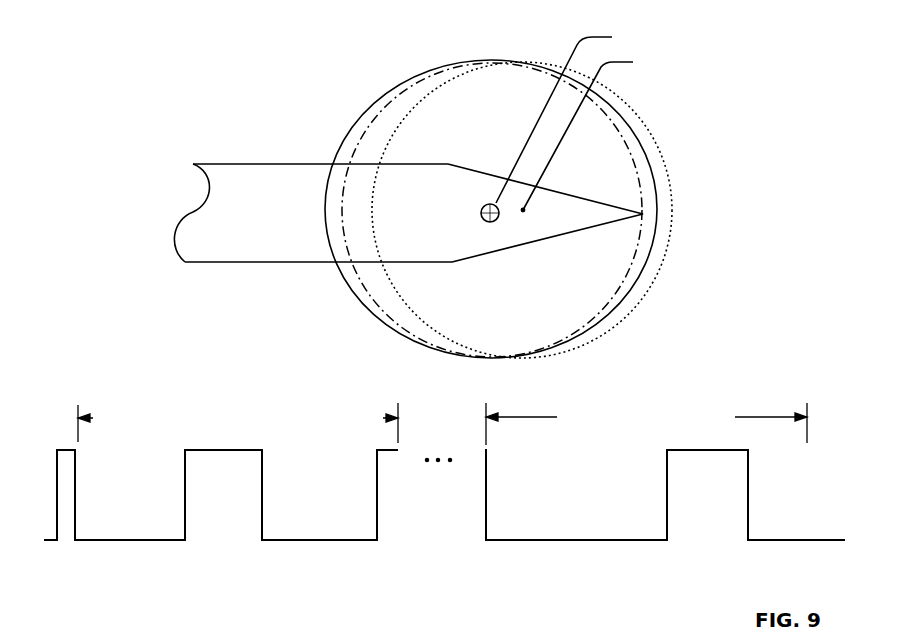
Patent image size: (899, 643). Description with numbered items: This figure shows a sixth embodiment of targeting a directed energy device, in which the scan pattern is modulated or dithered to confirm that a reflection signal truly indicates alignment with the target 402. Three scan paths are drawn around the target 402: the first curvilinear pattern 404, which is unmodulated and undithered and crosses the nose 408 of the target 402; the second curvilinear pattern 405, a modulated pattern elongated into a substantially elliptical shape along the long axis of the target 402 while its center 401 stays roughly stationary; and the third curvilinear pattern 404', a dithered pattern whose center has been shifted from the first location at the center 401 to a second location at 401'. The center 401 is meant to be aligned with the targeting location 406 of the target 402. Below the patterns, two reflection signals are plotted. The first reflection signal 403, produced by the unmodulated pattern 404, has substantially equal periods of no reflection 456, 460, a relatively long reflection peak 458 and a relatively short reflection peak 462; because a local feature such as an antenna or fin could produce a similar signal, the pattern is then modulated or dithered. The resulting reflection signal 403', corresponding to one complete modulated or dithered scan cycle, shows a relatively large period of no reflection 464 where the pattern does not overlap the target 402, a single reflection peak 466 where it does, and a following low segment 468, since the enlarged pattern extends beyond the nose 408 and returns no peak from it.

The center of the curvilinear pattern 401 is at (576, 117).
The second center location 401' is at (602, 134).
The target 402 is at (229, 163).
The first reflection signal 403 is at (219, 515).
The reflection signal of dithered or modulated scan cycle 403' is at (653, 513).
The first curvilinear pattern 404 is at (524, 209).
The third curvilinear pattern 404' is at (573, 210).
The second curvilinear pattern 405 is at (637, 277).
The targeting location 406 is at (481, 211).
The nose 408 is at (643, 214).
The period of no reflection 456 is at (125, 541).
The relatively long reflection peak 458 is at (184, 484).
The period of no reflection 460 is at (293, 541).
The relatively short reflection peak 462 is at (377, 473).
The period of no reflection 464 is at (550, 540).
The single reflection peak 466 is at (667, 488).
The low signal segment 468 is at (777, 540).